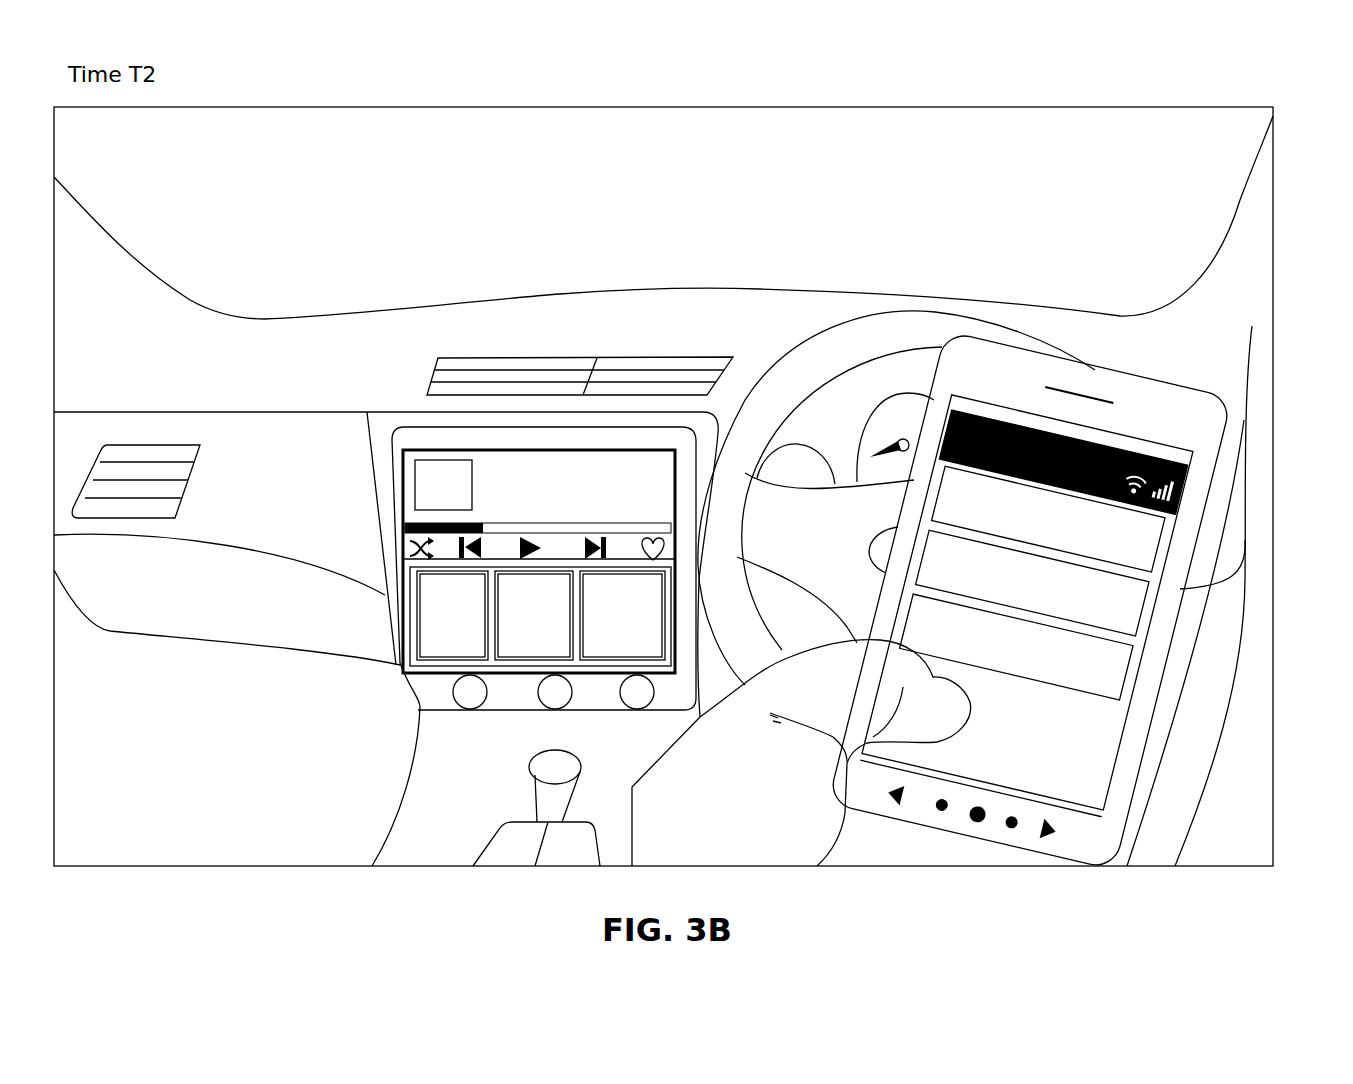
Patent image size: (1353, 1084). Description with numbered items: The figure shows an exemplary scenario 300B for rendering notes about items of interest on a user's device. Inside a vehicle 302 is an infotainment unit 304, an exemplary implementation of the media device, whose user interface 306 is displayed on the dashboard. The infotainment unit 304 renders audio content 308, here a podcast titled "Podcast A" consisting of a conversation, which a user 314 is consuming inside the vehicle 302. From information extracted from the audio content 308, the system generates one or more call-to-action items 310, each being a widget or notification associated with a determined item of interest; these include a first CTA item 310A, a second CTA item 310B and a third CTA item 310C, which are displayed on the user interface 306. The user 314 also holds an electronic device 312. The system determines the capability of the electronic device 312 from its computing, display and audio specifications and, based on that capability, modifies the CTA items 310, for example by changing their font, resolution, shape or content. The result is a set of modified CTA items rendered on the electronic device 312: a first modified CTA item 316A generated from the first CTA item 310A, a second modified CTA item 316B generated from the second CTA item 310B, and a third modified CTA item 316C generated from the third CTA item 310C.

The exemplary scenario 300B is at (1268, 101).
The vehicle 302 is at (1249, 329).
The infotainment unit 304 is at (431, 437).
The user interface 306 is at (396, 452).
The audio content 308 is at (414, 449).
The call-to-action (CTA) items 310 is at (413, 648).
The first CTA item 310A is at (420, 664).
The second CTA item 310B is at (507, 662).
The third CTA item 310C is at (628, 662).
The electronic device 312 is at (1137, 773).
The user 314 is at (840, 827).
The first modified CTA item 316A is at (1153, 552).
The second modified CTA item 316B is at (1138, 615).
The third modified CTA item 316C is at (1120, 673).